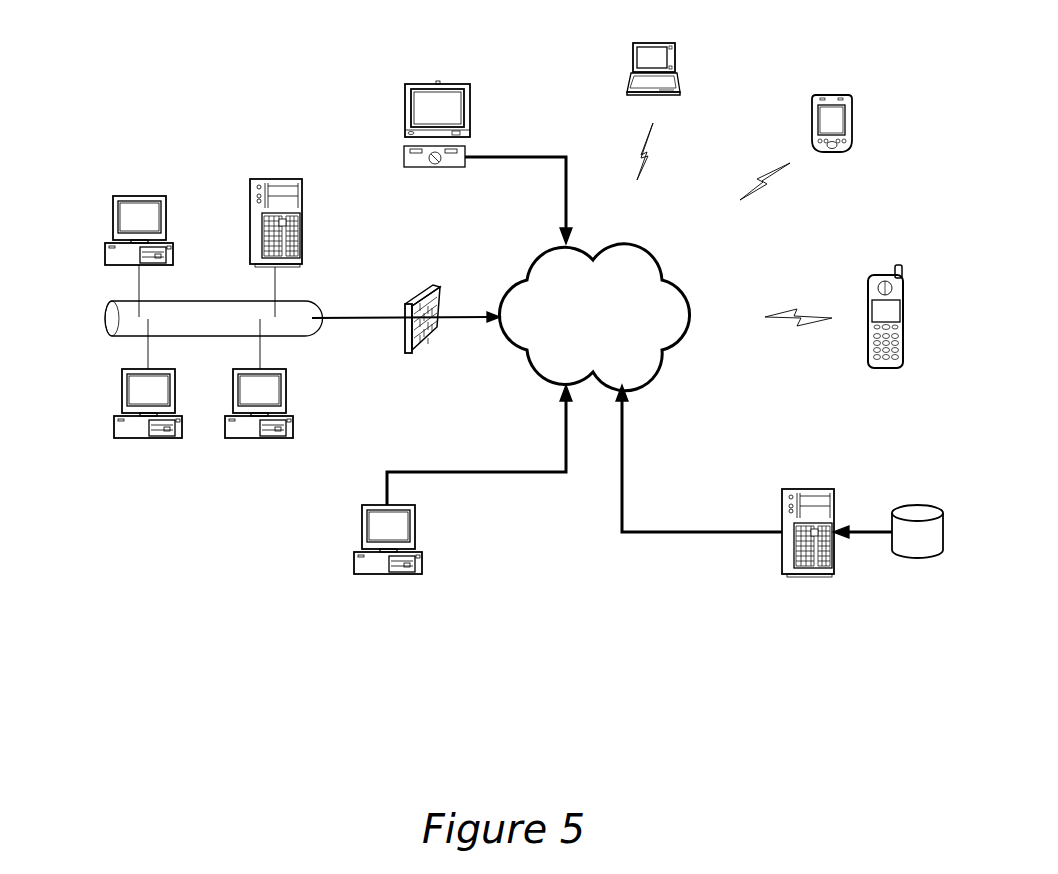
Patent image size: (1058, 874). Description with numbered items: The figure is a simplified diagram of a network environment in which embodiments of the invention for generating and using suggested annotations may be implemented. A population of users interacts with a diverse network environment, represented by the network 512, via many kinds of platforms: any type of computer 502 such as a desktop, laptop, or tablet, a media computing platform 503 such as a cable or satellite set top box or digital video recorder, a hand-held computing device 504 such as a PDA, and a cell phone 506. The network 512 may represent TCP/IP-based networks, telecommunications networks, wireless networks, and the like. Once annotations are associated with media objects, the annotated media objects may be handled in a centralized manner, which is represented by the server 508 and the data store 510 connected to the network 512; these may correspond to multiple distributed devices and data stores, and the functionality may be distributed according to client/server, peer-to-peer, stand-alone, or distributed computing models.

The computer 502 is at (113, 222).
The media computing platform 503 is at (404, 152).
The hand-held computing device 504 is at (815, 95).
The cell phone 506 is at (868, 280).
The server 508 is at (787, 489).
The data store 510 is at (918, 505).
The network 512 is at (536, 258).